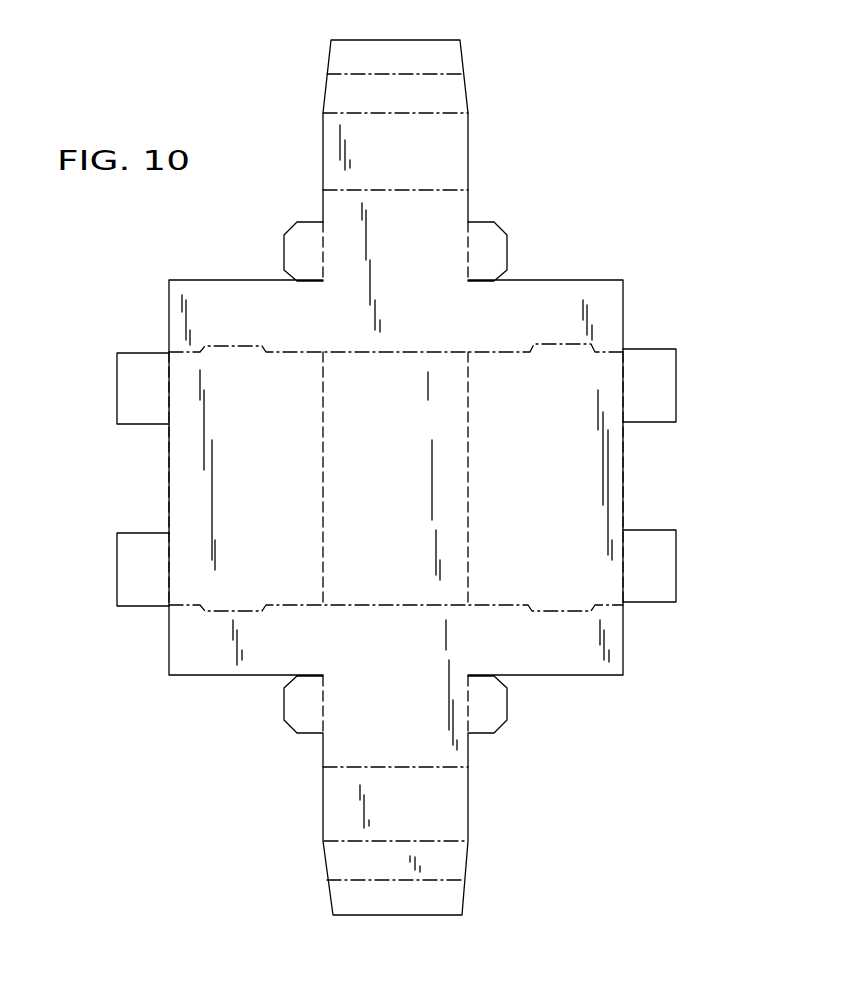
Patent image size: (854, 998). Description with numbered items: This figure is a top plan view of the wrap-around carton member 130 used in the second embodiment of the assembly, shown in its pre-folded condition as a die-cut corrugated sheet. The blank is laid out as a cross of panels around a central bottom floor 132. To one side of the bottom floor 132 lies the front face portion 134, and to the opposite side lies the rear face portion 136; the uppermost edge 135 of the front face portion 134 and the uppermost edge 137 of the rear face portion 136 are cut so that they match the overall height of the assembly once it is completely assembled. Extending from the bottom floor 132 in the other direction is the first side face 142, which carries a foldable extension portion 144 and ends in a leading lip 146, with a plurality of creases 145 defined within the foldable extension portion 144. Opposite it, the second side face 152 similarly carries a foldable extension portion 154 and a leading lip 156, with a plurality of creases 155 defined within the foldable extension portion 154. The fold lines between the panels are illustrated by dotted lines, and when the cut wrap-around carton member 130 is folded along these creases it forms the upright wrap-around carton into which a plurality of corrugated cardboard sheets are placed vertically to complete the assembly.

The wrap-around carton member 130 is at (574, 172).
The bottom floor 132 is at (452, 388).
The front face portion 134 is at (233, 478).
The uppermost edge 135 is at (167, 466).
The rear face portion 136 is at (563, 485).
The uppermost edge 137 is at (626, 510).
The first side face 142 is at (433, 268).
The foldable extension portion 144 is at (443, 150).
The creases 145 is at (370, 72).
The leading lip 146 is at (418, 54).
The second side face 152 is at (437, 740).
The foldable extension portion 154 is at (447, 858).
The creases 155 is at (350, 767).
The leading lip 156 is at (443, 897).